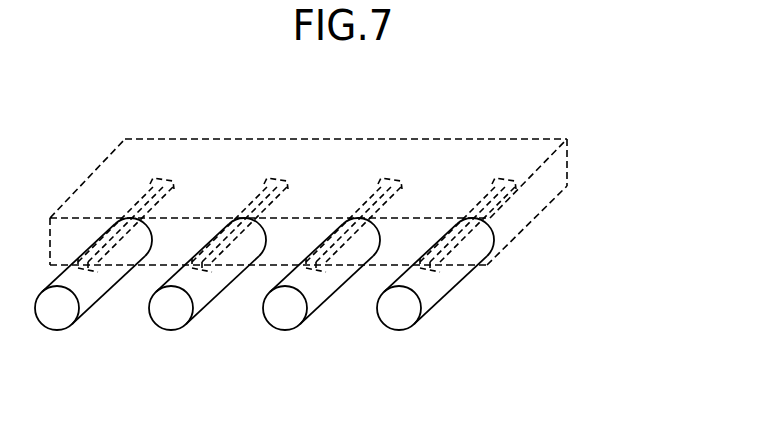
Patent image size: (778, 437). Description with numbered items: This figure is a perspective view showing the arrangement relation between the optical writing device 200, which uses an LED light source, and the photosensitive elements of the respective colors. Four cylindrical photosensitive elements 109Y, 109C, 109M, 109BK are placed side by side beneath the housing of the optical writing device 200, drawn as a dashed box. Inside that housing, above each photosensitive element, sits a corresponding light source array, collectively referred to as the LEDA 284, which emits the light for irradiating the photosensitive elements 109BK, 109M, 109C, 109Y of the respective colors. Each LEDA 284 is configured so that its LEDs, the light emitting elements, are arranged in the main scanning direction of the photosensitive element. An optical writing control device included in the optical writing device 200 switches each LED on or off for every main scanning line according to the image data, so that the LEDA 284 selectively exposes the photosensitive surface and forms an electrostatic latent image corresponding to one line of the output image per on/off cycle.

The optical writing device 200 is at (567, 140).
The LEDA 284 is at (163, 180).
The photosensitive element 109Y is at (70, 328).
The photosensitive element 109C is at (184, 328).
The photosensitive element 109M is at (298, 328).
The photosensitive element 109BK is at (412, 328).